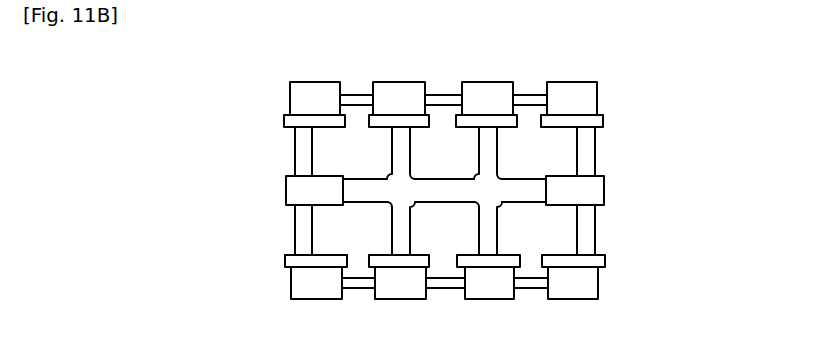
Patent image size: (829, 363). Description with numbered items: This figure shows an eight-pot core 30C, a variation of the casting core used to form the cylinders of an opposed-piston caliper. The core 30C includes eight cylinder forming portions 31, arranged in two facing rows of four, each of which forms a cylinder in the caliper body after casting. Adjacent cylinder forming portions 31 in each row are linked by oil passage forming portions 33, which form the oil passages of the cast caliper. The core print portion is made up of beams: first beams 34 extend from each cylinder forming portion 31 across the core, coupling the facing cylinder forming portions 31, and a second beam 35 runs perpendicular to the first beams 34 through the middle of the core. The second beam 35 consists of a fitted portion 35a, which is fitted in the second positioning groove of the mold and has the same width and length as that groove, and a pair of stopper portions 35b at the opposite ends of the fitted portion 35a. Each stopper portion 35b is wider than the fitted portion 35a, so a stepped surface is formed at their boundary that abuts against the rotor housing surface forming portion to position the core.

The eight-pot core 30C is at (693, 76).
The cylinder forming portion 31 is at (317, 93).
The oil passage forming portion 33 is at (355, 98).
The first beam 34 is at (286, 150).
The second beam 35 is at (435, 192).
The fitted portion 35a is at (369, 187).
The stopper portion 35b is at (287, 193).